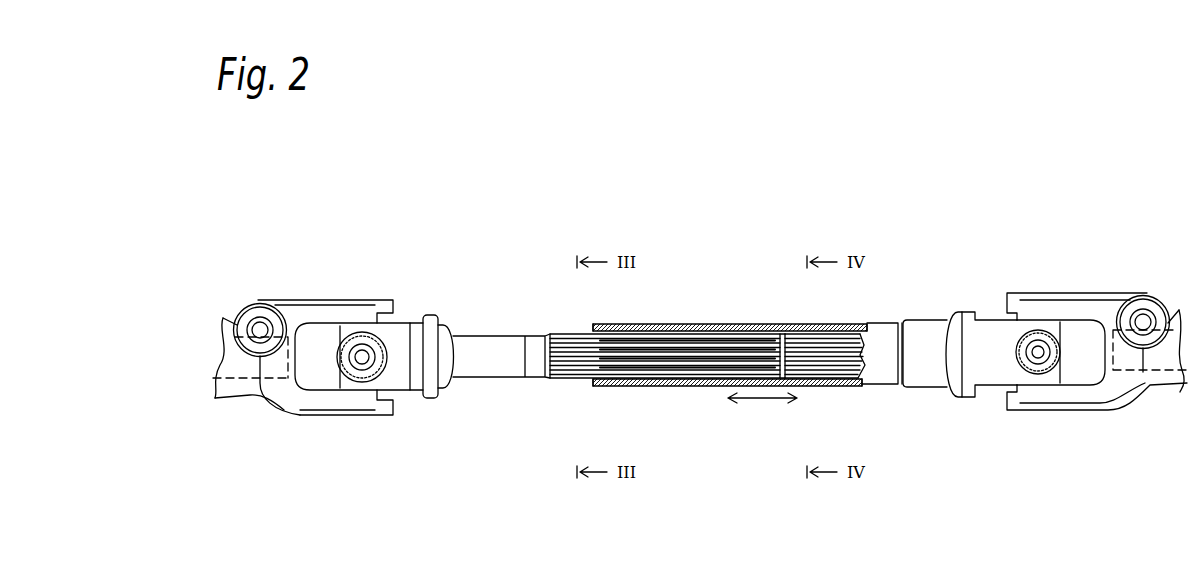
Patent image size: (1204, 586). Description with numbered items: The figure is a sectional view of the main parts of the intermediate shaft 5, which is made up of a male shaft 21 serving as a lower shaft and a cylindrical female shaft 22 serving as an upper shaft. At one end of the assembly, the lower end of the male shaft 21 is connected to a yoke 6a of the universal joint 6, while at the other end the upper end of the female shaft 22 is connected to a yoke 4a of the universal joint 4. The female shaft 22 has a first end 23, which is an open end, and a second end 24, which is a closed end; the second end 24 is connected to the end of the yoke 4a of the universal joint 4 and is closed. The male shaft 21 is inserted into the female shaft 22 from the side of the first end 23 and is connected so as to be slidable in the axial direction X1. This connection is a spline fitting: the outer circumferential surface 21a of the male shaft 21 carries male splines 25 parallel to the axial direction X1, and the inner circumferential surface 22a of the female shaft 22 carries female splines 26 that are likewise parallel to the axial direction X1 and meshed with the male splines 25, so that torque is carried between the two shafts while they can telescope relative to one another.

The universal joint 4 is at (1097, 287).
The yoke 4a is at (1002, 367).
The intermediate shaft 5 is at (669, 296).
The universal joint 6 is at (318, 289).
The yoke 6a is at (410, 384).
The male shaft 21 is at (511, 324).
The outer circumferential surface 21a is at (567, 380).
The female shaft 22 is at (710, 317).
The inner circumferential surface 22a is at (825, 332).
The first end 23 is at (603, 324).
The second end 24 is at (918, 327).
The male splines 25 is at (638, 367).
The female splines 26 is at (820, 358).
The axial direction X1 is at (762, 400).